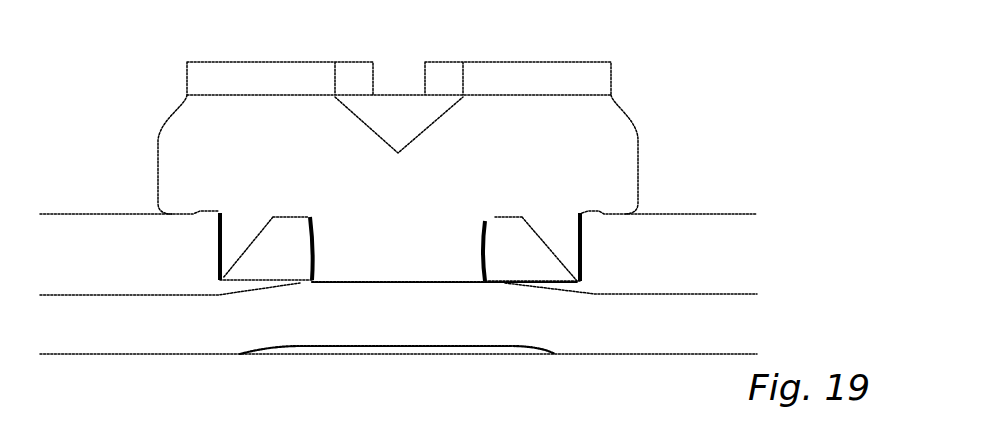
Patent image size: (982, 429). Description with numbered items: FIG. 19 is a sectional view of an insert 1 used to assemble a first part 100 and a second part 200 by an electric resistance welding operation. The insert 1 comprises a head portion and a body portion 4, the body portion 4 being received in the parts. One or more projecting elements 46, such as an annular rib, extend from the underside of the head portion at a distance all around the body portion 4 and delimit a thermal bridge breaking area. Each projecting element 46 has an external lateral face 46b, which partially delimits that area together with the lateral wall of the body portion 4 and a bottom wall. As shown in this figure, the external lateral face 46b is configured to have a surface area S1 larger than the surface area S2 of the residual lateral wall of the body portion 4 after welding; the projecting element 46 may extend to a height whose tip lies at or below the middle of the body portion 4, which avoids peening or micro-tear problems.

The insert 1 is at (669, 86).
The projecting element 46 is at (238, 230).
The external lateral face 46b is at (217, 233).
The first part 100 is at (732, 228).
The second part 200 is at (628, 340).
The surface area of the external lateral face S1 is at (218, 252).
The surface area of the residual lateral wall S2 is at (312, 252).
The body portion 4 is at (403, 252).